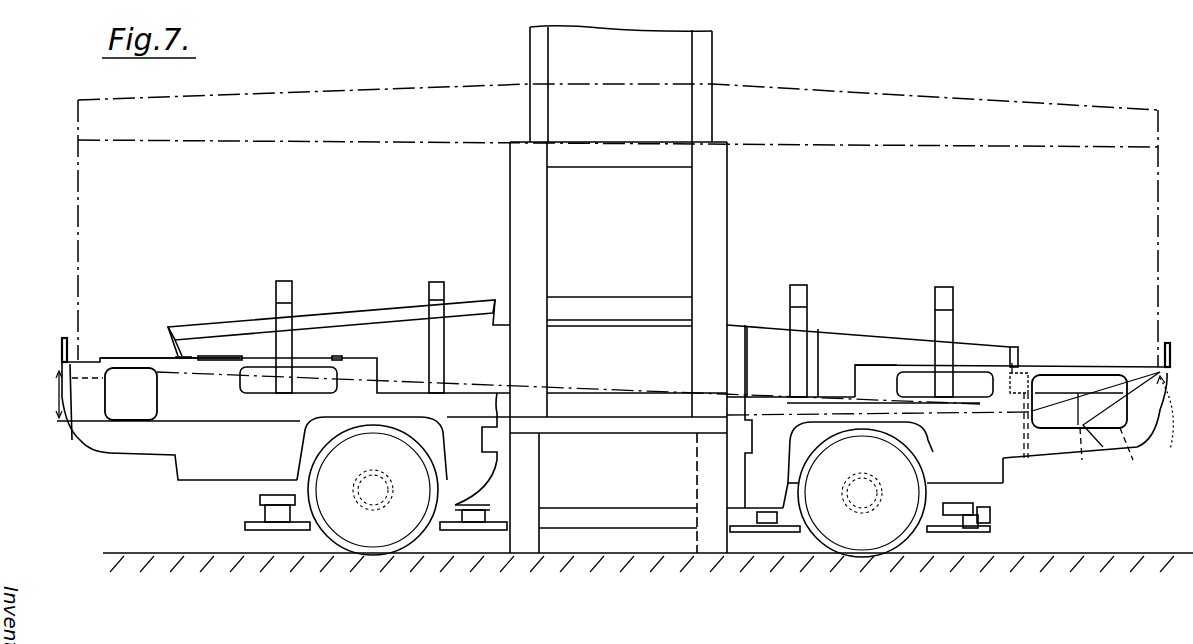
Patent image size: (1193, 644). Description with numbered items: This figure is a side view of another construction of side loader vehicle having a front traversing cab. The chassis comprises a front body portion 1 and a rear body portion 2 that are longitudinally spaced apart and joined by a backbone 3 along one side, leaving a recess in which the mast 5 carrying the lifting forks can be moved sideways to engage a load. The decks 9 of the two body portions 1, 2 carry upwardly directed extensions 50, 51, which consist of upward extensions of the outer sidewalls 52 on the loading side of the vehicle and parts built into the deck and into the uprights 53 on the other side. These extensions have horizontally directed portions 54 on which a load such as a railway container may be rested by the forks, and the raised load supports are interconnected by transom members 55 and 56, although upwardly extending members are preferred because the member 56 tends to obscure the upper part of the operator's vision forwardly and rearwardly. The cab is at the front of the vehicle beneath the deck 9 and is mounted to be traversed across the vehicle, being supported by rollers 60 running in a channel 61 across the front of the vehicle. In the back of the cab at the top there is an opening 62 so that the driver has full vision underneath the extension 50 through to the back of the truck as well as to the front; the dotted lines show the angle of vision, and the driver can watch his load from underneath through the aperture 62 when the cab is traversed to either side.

The front body portion 1 is at (950, 427).
The rear body portion 2 is at (598, 407).
The backbone 3 is at (618, 493).
The mast 5 is at (542, 228).
The deck 9 is at (151, 346).
The upwardly directed extension 50 is at (873, 365).
The upwardly directed extension 51 is at (318, 365).
The outer sidewall 52 is at (90, 397).
The upright 53 is at (287, 293).
The horizontally directed portion 54 is at (190, 356).
The transom member 55 is at (1163, 348).
The transom member 56 is at (68, 344).
The roller 60 is at (1025, 373).
The channel 61 is at (1012, 363).
The opening 62 is at (1027, 410).